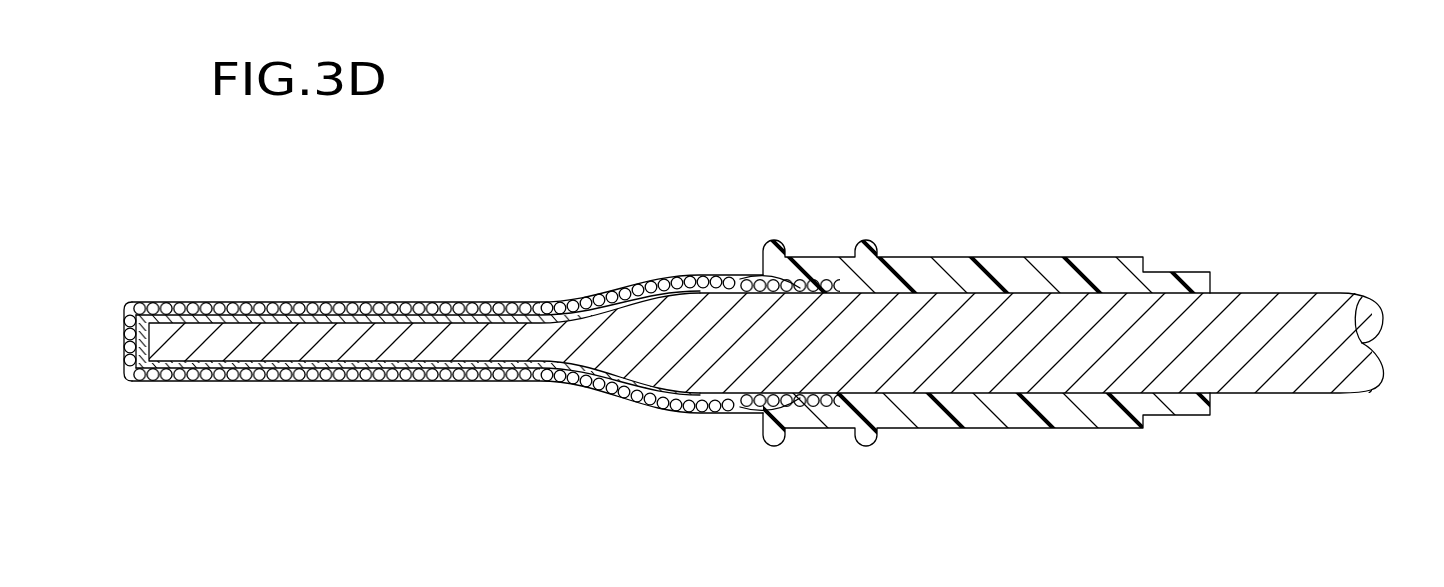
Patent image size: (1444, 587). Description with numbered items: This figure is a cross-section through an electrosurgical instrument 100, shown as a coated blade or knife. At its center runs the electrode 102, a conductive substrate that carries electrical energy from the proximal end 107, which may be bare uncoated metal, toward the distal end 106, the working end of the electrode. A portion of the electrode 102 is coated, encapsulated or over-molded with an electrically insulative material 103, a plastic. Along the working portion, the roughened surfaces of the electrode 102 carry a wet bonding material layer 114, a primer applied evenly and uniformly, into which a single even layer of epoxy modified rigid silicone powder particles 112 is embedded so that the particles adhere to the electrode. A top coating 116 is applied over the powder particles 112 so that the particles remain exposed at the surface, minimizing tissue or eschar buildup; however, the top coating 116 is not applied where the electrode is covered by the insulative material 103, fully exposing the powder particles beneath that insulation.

The electrosurgical instrument 100 is at (1198, 198).
The electrode 102 is at (670, 352).
The electrically insulative material 103 is at (820, 257).
The distal end 106 is at (206, 283).
The proximal end 107 is at (1322, 283).
The epoxy modified rigid silicone powder particles 112 is at (402, 372).
The bonding material layer 114 is at (347, 318).
The top coating 116 is at (166, 385).